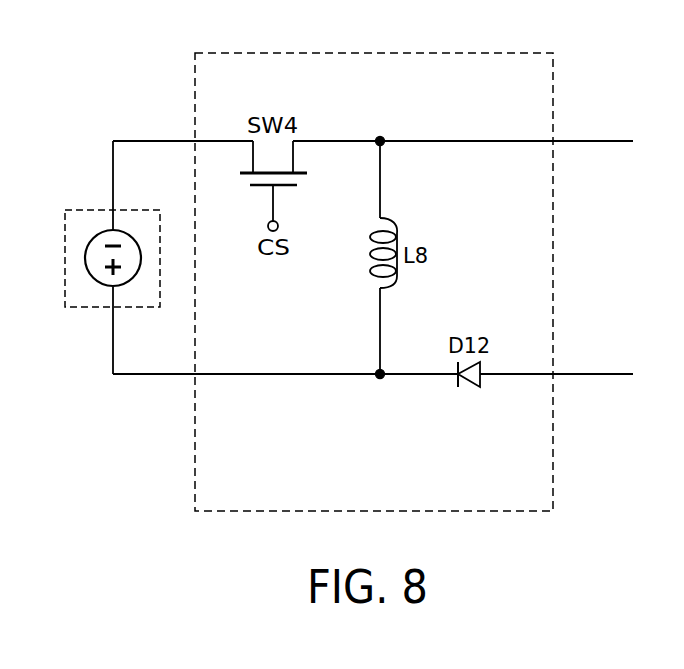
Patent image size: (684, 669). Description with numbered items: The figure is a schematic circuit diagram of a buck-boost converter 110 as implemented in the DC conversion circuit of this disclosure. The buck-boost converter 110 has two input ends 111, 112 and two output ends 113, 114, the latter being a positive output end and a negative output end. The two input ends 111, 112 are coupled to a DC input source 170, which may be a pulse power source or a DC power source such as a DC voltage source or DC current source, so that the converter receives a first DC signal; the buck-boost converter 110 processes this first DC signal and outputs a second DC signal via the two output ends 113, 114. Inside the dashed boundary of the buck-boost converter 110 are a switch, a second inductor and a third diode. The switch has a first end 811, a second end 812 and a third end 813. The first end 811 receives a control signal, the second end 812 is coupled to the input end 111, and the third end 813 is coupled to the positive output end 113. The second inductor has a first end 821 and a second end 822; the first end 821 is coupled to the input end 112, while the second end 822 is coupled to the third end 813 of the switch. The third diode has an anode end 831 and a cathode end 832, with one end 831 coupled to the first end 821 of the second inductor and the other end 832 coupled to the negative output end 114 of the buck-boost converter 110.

The buck-boost converter 110 is at (415, 52).
The input end 111 is at (166, 138).
The input end 112 is at (167, 378).
The output end 113 is at (582, 138).
The output end 114 is at (583, 378).
The DC input source 170 is at (87, 208).
The first end 811 is at (275, 203).
The second end 812 is at (232, 138).
The third end 813 is at (321, 138).
The first end 821 is at (382, 298).
The second end 822 is at (382, 207).
The anode end 831 is at (440, 378).
The cathode end 832 is at (503, 378).